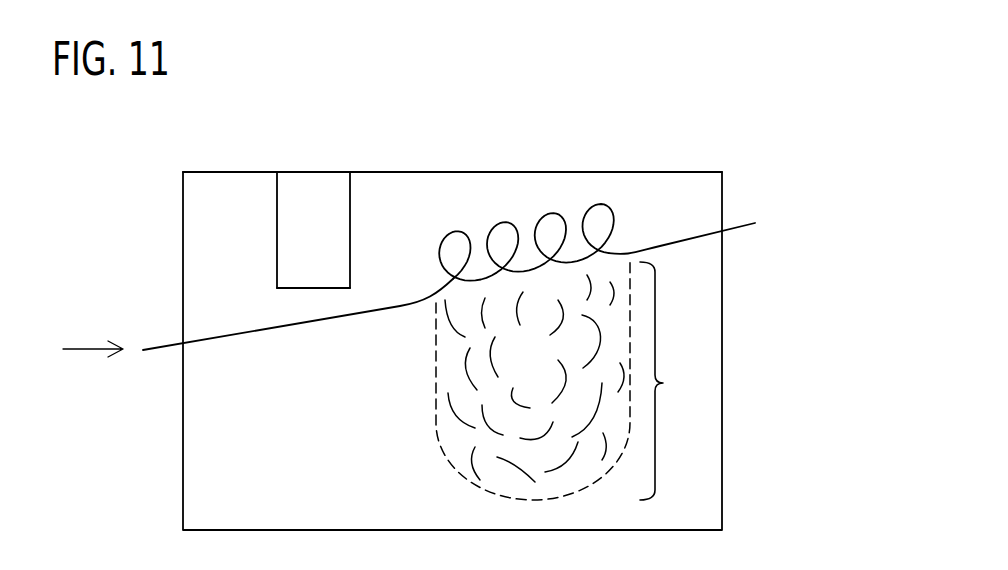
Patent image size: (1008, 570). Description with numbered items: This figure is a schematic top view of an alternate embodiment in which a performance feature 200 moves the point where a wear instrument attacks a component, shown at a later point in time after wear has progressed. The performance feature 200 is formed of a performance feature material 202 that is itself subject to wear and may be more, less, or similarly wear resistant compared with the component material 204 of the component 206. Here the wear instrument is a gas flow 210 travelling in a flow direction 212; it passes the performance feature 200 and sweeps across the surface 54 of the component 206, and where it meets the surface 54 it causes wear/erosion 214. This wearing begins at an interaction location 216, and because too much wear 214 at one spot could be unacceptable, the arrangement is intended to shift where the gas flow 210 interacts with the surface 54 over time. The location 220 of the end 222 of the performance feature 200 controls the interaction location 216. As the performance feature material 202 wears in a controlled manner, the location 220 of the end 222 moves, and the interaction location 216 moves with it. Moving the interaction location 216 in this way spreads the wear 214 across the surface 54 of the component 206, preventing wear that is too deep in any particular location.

The surface 54 is at (320, 465).
The performance feature 200 is at (349, 204).
The performance feature material 202 is at (315, 192).
The component material 204 is at (457, 156).
The component 206 is at (628, 192).
The gas flow 210 is at (287, 330).
The flow direction 212 is at (85, 348).
The wear/erosion 214 is at (663, 383).
The interaction location 216 is at (539, 226).
The location of the end 220 is at (377, 240).
The end 222 is at (313, 278).